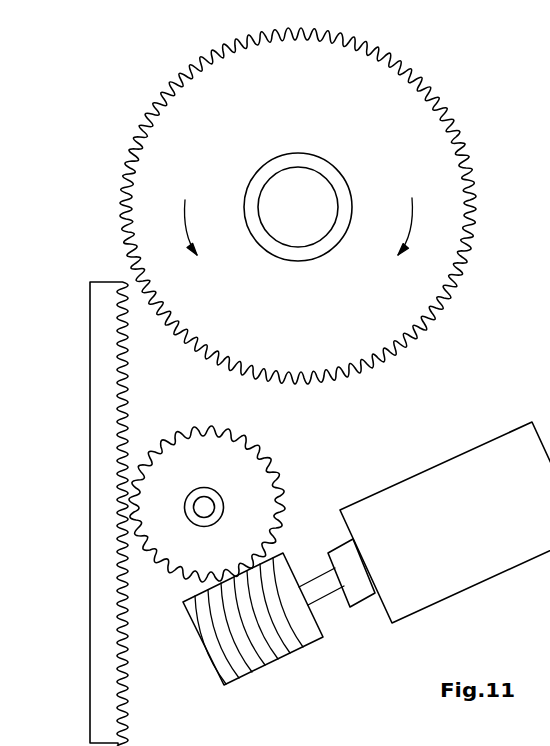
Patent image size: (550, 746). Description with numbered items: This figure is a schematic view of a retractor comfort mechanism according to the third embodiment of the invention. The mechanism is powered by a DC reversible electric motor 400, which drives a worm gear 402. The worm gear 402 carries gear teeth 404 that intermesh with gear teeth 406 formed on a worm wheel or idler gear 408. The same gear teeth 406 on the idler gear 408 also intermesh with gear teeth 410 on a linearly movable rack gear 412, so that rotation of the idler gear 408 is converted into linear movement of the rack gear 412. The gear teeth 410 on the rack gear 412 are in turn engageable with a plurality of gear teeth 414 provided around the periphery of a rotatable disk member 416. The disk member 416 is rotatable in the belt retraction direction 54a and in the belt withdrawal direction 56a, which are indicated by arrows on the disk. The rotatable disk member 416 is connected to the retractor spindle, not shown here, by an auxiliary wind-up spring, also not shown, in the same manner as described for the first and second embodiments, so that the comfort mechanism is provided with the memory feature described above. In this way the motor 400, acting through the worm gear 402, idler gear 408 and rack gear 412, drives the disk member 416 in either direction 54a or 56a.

The DC reversible electric motor 400 is at (468, 565).
The worm gear 402 is at (293, 648).
The gear teeth 404 is at (252, 657).
The gear teeth 406 is at (285, 518).
The idler gear 408 is at (246, 496).
The gear teeth 410 is at (120, 655).
The rack gear 412 is at (123, 514).
The gear teeth 414 is at (452, 123).
The rotatable disk member 416 is at (331, 201).
The belt retraction direction 54a is at (188, 216).
The belt withdrawal direction 56a is at (411, 214).